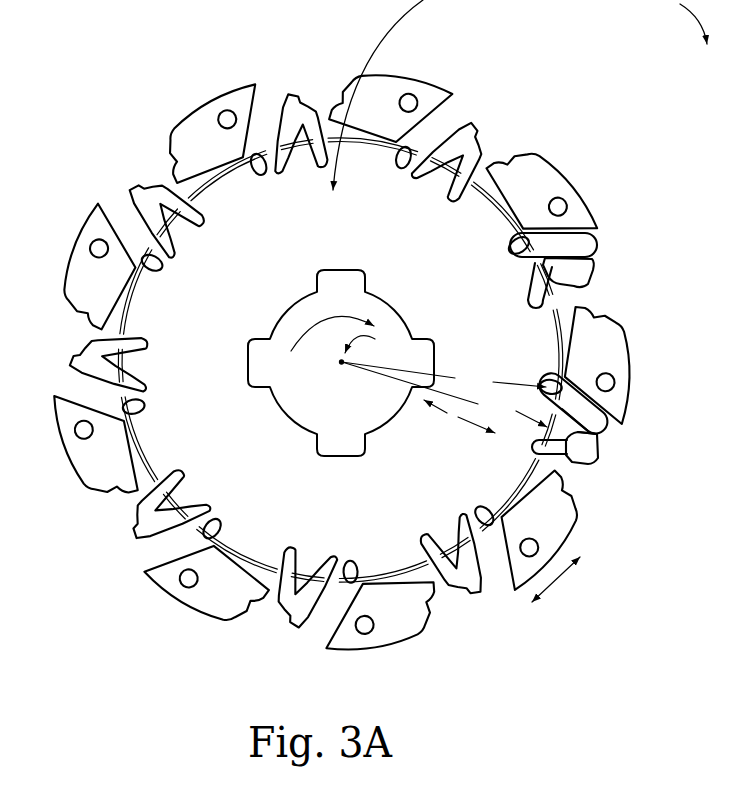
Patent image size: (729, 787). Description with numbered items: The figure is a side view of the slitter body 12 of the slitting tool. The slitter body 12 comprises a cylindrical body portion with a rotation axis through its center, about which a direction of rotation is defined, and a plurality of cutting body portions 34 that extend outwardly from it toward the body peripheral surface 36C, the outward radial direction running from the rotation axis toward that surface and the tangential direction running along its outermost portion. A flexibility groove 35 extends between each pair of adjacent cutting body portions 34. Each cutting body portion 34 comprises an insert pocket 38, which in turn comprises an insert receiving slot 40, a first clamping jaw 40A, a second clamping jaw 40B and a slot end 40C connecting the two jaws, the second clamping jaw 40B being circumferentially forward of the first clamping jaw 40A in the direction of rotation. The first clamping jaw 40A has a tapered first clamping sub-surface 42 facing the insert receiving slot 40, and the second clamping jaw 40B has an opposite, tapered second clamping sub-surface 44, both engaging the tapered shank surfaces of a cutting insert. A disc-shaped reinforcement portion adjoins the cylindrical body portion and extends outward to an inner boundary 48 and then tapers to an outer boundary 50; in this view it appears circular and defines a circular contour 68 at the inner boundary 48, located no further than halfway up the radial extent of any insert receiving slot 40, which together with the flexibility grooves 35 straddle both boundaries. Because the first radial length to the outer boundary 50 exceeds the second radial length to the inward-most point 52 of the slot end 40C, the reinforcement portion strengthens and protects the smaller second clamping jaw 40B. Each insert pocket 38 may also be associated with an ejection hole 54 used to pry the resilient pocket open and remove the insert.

The slitter body 12 is at (152, 100).
The cutting body portions 34 is at (411, 62).
The flexibility groove 35 is at (318, 181).
The body peripheral surface 36C is at (231, 86).
The insert pocket 38 is at (654, 242).
The insert receiving slot 40 is at (602, 246).
The first clamping jaw 40A is at (638, 408).
The second clamping jaw 40B is at (583, 467).
The slot end 40C is at (562, 382).
The first clamping sub-surface 42 is at (597, 411).
The second clamping sub-surface 44 is at (585, 425).
The inner boundary 48 is at (543, 458).
The outer boundary 50 is at (562, 432).
The inward-most point 52 is at (510, 258).
The ejection hole 54 is at (618, 393).
The circular contour 68 is at (493, 186).